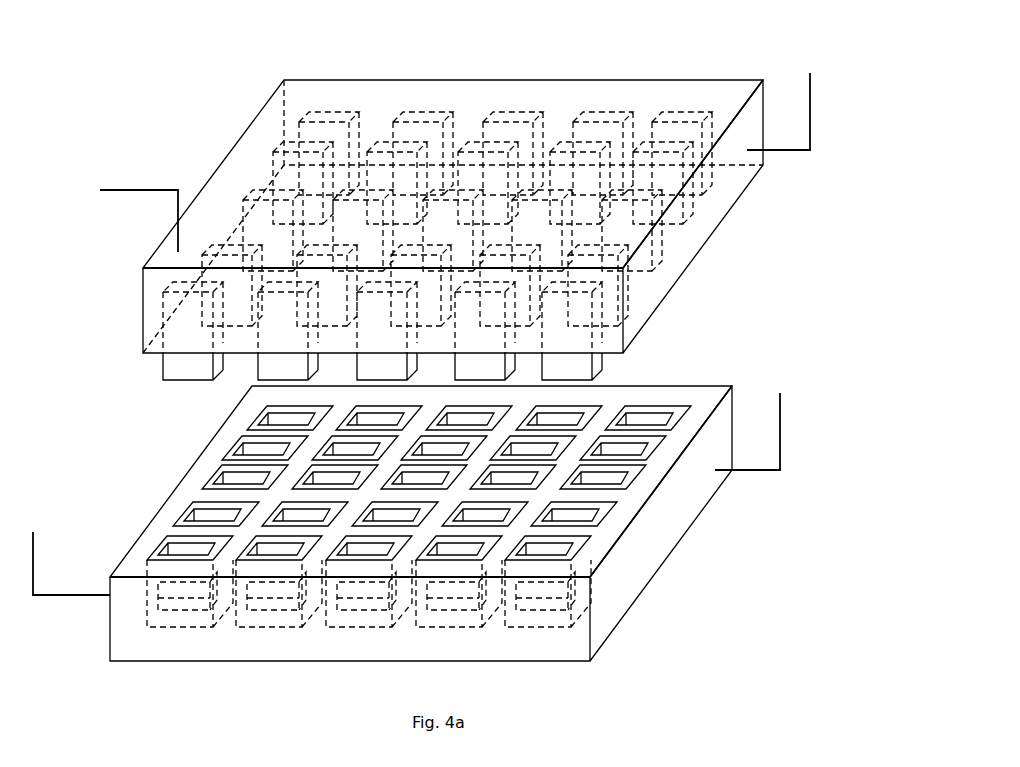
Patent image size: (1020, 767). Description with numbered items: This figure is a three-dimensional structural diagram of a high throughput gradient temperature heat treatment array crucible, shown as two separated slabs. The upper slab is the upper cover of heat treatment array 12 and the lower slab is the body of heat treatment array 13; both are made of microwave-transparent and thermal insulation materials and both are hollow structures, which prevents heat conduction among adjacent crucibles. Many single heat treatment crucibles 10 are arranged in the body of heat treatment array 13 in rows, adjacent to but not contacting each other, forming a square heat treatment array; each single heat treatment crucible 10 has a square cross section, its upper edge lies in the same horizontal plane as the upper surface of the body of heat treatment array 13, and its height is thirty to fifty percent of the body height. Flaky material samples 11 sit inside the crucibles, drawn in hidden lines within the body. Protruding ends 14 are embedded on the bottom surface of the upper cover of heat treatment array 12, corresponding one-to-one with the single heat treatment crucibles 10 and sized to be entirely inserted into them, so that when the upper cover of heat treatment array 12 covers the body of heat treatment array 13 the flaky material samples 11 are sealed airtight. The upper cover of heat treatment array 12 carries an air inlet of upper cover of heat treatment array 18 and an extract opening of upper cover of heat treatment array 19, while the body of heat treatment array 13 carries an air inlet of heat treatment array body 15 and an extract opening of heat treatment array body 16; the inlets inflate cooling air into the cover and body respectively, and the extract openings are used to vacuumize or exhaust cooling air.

The single heat treatment crucible 10 is at (585, 561).
The flaky material sample 11 is at (550, 605).
The upper cover of heat treatment array 12 is at (657, 92).
The body of heat treatment array 13 is at (675, 504).
The protruding end 14 is at (582, 370).
The air inlet of heat treatment array body 15 is at (35, 570).
The extract opening of heat treatment array body 16 is at (782, 425).
The air inlet of upper cover of heat treatment array 18 is at (146, 190).
The extract opening of upper cover of heat treatment array 19 is at (812, 117).